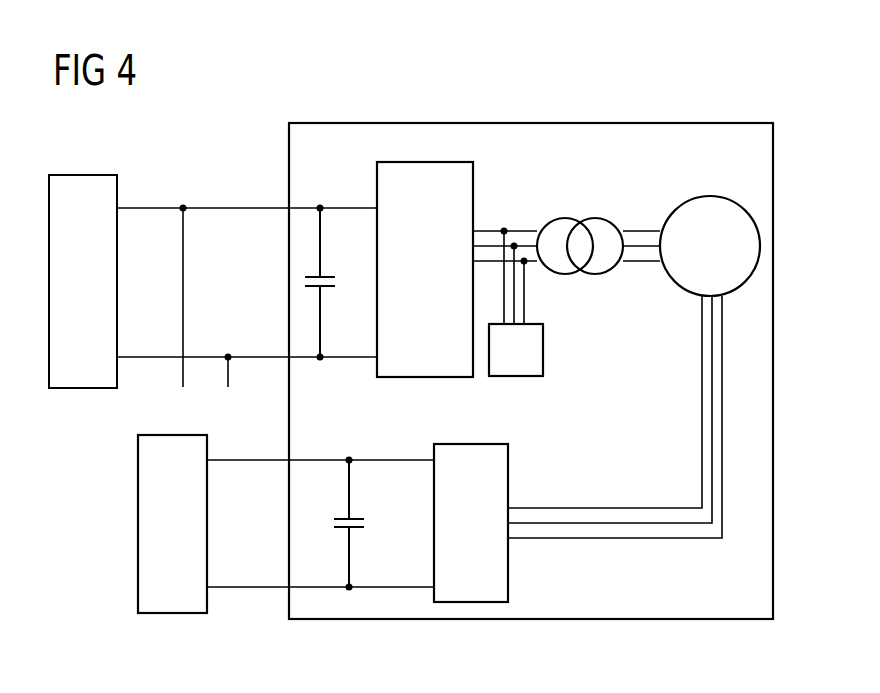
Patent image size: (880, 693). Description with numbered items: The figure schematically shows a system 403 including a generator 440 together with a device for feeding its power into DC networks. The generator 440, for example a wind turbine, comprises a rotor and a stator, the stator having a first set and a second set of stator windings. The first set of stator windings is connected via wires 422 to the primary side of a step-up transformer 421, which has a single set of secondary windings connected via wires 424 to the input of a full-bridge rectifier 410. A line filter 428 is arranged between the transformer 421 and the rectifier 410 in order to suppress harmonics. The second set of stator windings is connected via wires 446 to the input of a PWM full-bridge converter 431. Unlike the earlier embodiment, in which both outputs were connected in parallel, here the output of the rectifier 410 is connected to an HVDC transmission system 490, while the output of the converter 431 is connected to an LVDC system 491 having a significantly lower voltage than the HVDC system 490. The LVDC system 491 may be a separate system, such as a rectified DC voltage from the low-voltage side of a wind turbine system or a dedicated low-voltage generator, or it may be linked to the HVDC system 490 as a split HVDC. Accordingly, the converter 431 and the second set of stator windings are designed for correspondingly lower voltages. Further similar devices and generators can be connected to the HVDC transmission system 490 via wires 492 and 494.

The system 403 is at (204, 175).
The rectifier 410 is at (377, 182).
The step-up transformer 421 is at (582, 228).
The wires 422 is at (647, 262).
The wires 424 is at (490, 231).
The line filter 428 is at (515, 377).
The converter 431 is at (508, 557).
The generator 440 is at (706, 197).
The wires 446 is at (701, 412).
The HVDC transmission system 490 is at (83, 388).
The LVDC system 491 is at (138, 530).
The wires 492 is at (183, 305).
The wires 494 is at (226, 387).